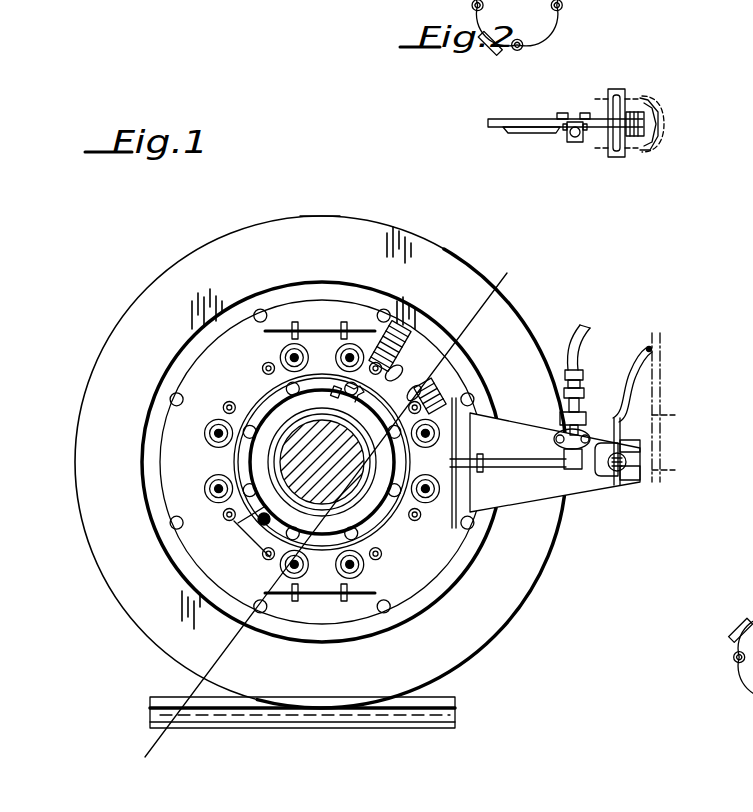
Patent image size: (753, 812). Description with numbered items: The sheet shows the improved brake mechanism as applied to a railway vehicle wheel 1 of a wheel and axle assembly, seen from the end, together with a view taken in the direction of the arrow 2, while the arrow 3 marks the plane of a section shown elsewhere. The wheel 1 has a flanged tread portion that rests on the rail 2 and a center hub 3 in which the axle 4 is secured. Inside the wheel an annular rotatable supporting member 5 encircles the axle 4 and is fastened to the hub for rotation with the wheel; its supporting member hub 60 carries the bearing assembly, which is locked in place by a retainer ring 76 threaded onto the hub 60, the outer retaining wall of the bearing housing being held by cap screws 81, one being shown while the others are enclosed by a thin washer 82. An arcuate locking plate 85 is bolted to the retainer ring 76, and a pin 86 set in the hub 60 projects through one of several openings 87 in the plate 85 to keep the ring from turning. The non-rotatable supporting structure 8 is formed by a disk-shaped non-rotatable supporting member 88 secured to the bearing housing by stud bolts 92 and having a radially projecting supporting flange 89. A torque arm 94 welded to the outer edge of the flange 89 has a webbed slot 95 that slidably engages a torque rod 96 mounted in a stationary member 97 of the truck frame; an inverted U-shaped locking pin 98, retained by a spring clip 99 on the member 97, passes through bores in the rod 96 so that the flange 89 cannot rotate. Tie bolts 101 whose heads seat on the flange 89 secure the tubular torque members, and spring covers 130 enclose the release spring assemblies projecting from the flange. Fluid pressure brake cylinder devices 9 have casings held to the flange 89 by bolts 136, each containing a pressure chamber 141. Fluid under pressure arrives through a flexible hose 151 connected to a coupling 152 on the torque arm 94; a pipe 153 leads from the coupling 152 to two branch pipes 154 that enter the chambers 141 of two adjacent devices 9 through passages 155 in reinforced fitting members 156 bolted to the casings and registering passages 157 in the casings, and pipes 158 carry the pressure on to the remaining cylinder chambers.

In FIG. 1, the railway vehicle wheel 1 is at (78, 466).
In FIG. 1, the rail 2 is at (458, 712).
In FIG. 1, the center hub 3 is at (145, 757).
In FIG. 1, the axle 4 is at (340, 478).
In FIG. 1, the rotatable supporting member 5 is at (304, 420).
In FIG. 1, the non-rotatable supporting structure 8 is at (318, 250).
In FIG. 1, the fluid pressure brake cylinder device 9 is at (200, 340).
In FIG. 1, the supporting member hub 60 is at (258, 526).
In FIG. 1, the retainer ring 76 is at (262, 560).
In FIG. 1, the cap screw 81 is at (246, 526).
In FIG. 1, the washer 82 is at (318, 566).
In FIG. 1, the locking plate 85 is at (308, 360).
In FIG. 1, the pin 86 is at (358, 398).
In FIG. 1, the opening 87 is at (322, 404).
In FIG. 1, the non-rotatable supporting member 88 is at (150, 441).
In FIG. 1, the supporting flange 89 is at (160, 486).
In FIG. 1, the stud bolt 92 is at (232, 462).
In FIG. 1, the torque arm 94 is at (530, 490).
In FIG. 2, the torque arm 94 is at (521, 106).
In FIG. 1, the webbed slot 95 is at (640, 486).
In FIG. 1, the torque rod 96 is at (610, 478).
In FIG. 2, the torque rod 96 is at (622, 92).
In FIG. 1, the stationary member 97 is at (656, 400).
In FIG. 2, the stationary member 97 is at (660, 128).
In FIG. 1, the locking pin 98 is at (642, 444).
In FIG. 2, the locking pin 98 is at (622, 158).
In FIG. 1, the spring clip 99 is at (648, 378).
In FIG. 2, the spring clip 99 is at (648, 104).
In FIG. 1, the tie bolt 101 is at (257, 310).
In FIG. 1, the spring cover 130 is at (222, 441).
In FIG. 1, the bolt 136 is at (490, 373).
In FIG. 1, the pressure chamber 141 is at (376, 338).
In FIG. 1, the flexible hose 151 is at (580, 352).
In FIG. 1, the coupling 152 is at (584, 414).
In FIG. 1, the pipe 153 is at (524, 458).
In FIG. 1, the branch pipe 154 is at (458, 424).
In FIG. 1, the passage 155 is at (380, 322).
In FIG. 1, the reinforced fitting member 156 is at (262, 320).
In FIG. 1, the passage 157 is at (396, 370).
In FIG. 1, the pipe 158 is at (306, 326).